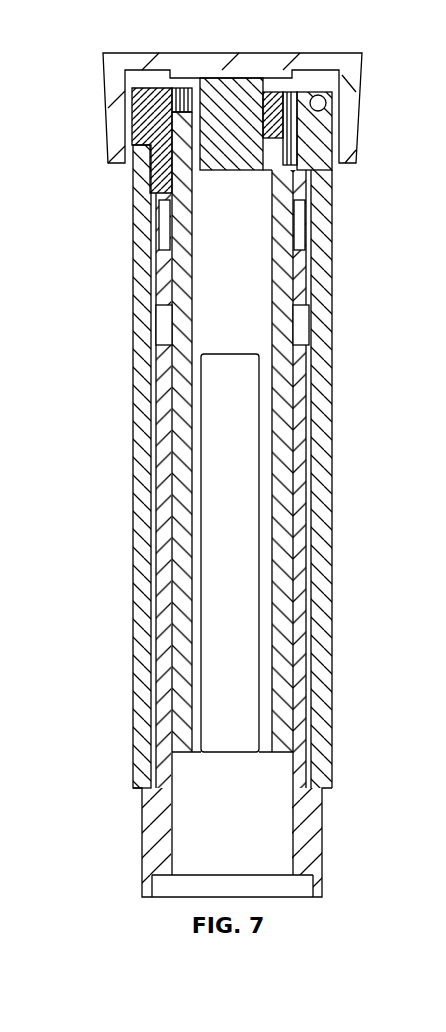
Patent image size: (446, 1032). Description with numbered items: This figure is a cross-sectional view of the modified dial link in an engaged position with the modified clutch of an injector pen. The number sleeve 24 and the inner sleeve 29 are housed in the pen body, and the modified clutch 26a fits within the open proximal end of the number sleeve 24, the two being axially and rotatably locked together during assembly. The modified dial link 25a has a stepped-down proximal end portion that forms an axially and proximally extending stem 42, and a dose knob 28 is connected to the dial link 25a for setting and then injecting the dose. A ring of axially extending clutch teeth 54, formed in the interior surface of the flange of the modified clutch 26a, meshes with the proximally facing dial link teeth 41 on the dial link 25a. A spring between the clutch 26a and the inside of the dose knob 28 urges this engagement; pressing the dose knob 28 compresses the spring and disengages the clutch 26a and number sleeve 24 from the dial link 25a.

The number sleeve 24 is at (336, 521).
The modified dial link 25a is at (298, 375).
The modified clutch 26a is at (305, 218).
The dose knob 28 is at (366, 82).
The inner sleeve 29 is at (323, 822).
The dial link teeth 41 is at (152, 262).
The stem 42 is at (233, 87).
The clutch teeth 54 is at (156, 270).